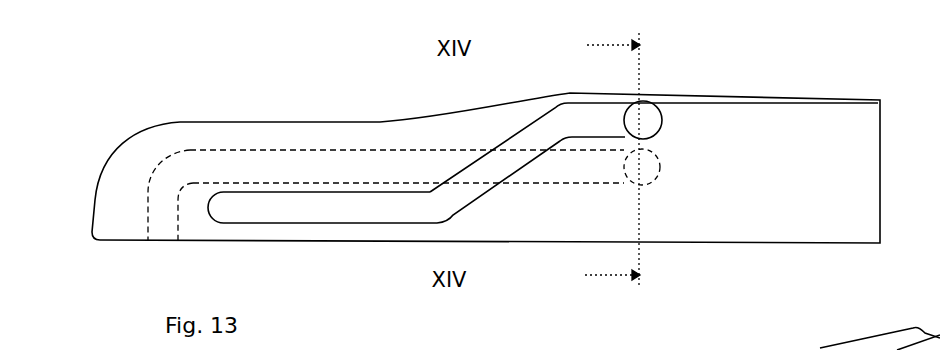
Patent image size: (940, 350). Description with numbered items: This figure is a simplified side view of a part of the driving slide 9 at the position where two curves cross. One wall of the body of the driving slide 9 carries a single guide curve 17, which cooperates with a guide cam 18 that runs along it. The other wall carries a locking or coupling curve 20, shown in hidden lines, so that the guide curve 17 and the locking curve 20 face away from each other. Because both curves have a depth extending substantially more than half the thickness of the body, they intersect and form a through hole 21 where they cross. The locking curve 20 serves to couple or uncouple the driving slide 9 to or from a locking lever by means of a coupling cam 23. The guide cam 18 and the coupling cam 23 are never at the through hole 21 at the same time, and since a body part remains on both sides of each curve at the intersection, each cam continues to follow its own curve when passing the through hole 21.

The driving slide 9 is at (857, 115).
The guide curve 17 is at (363, 212).
The guide cam 18 is at (646, 118).
The locking curve 20 is at (291, 163).
The through hole 21 is at (500, 167).
The coupling cam 23 is at (660, 162).